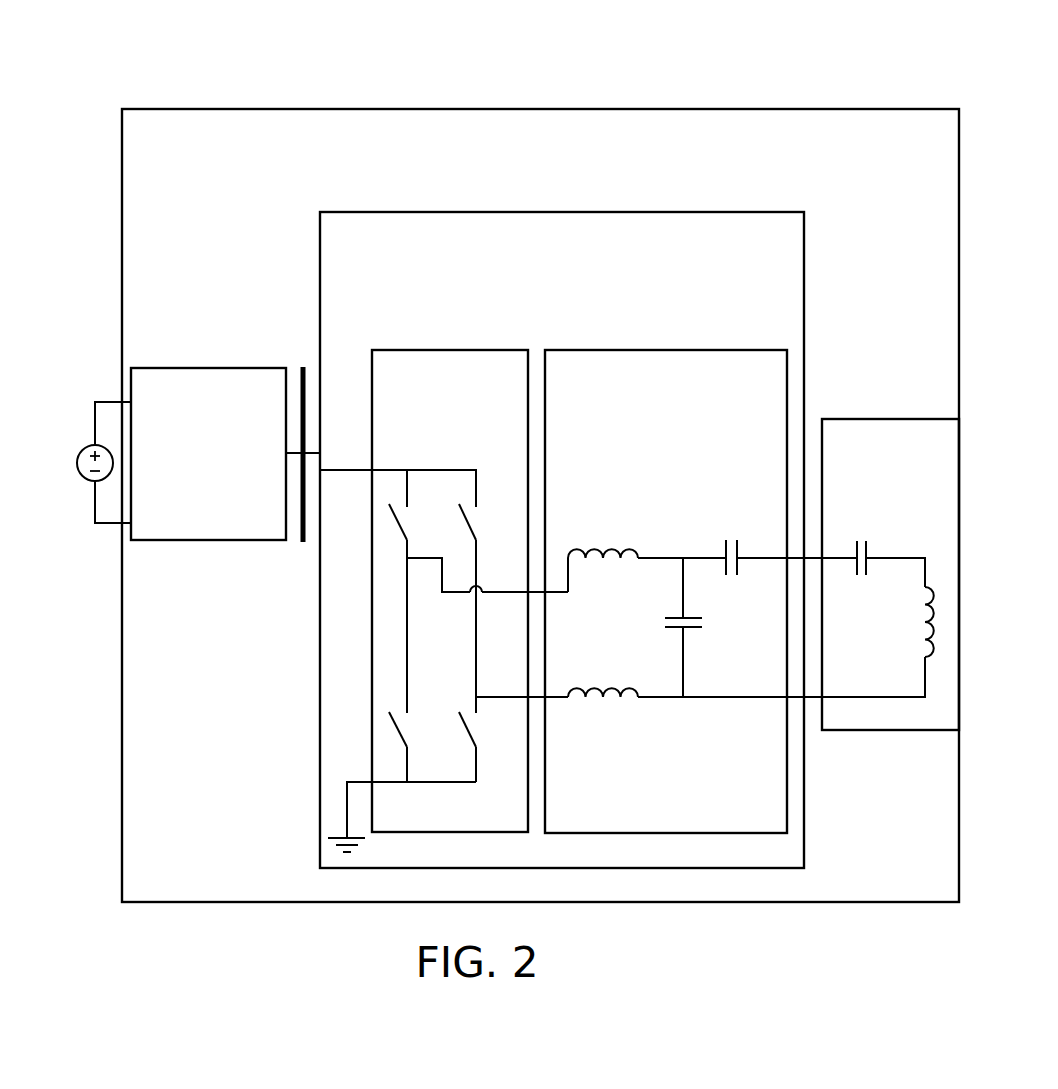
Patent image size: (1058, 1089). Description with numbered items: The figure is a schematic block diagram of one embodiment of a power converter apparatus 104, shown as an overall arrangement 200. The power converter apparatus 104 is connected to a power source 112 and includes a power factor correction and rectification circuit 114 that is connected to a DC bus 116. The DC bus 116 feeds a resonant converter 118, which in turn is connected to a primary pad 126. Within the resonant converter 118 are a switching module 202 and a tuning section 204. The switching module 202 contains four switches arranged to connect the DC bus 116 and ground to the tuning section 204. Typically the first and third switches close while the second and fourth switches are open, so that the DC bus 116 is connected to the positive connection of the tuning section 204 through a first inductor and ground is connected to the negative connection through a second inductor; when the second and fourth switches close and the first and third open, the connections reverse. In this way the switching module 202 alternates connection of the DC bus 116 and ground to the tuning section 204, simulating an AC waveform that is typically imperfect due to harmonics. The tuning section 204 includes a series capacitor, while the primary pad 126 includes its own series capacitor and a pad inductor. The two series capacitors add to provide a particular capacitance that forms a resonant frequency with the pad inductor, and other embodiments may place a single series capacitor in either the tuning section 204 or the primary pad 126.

The power converter system 200 is at (172, 52).
The power converter apparatus 104 is at (522, 169).
The power source 112 is at (87, 462).
The power factor correction and rectification circuit 114 is at (227, 504).
The DC bus 116 is at (303, 542).
The resonant converter 118 is at (543, 271).
The switching module 202 is at (469, 437).
The tuning section 204 is at (647, 412).
The primary pad 126 is at (909, 506).